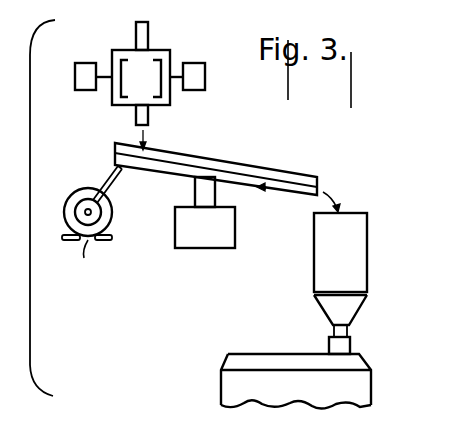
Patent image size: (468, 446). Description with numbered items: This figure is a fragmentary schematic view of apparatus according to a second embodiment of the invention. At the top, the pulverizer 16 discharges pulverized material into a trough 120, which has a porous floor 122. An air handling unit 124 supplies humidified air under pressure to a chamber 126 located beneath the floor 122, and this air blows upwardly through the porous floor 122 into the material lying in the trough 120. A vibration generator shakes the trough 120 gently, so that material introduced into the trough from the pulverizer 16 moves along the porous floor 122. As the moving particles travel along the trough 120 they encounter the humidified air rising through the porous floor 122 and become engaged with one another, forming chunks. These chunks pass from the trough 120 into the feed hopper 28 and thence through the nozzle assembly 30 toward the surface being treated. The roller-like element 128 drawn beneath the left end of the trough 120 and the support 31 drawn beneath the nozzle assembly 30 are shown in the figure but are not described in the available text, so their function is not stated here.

The pulverizer 16 is at (163, 50).
The trough 120 is at (208, 149).
The porous floor 122 is at (252, 173).
The air handling unit 124 is at (210, 247).
The chamber 126 is at (266, 192).
The roller 128 is at (92, 230).
The feed hopper 28 is at (367, 254).
The nozzle assembly 30 is at (351, 345).
The support platform 31 is at (222, 362).